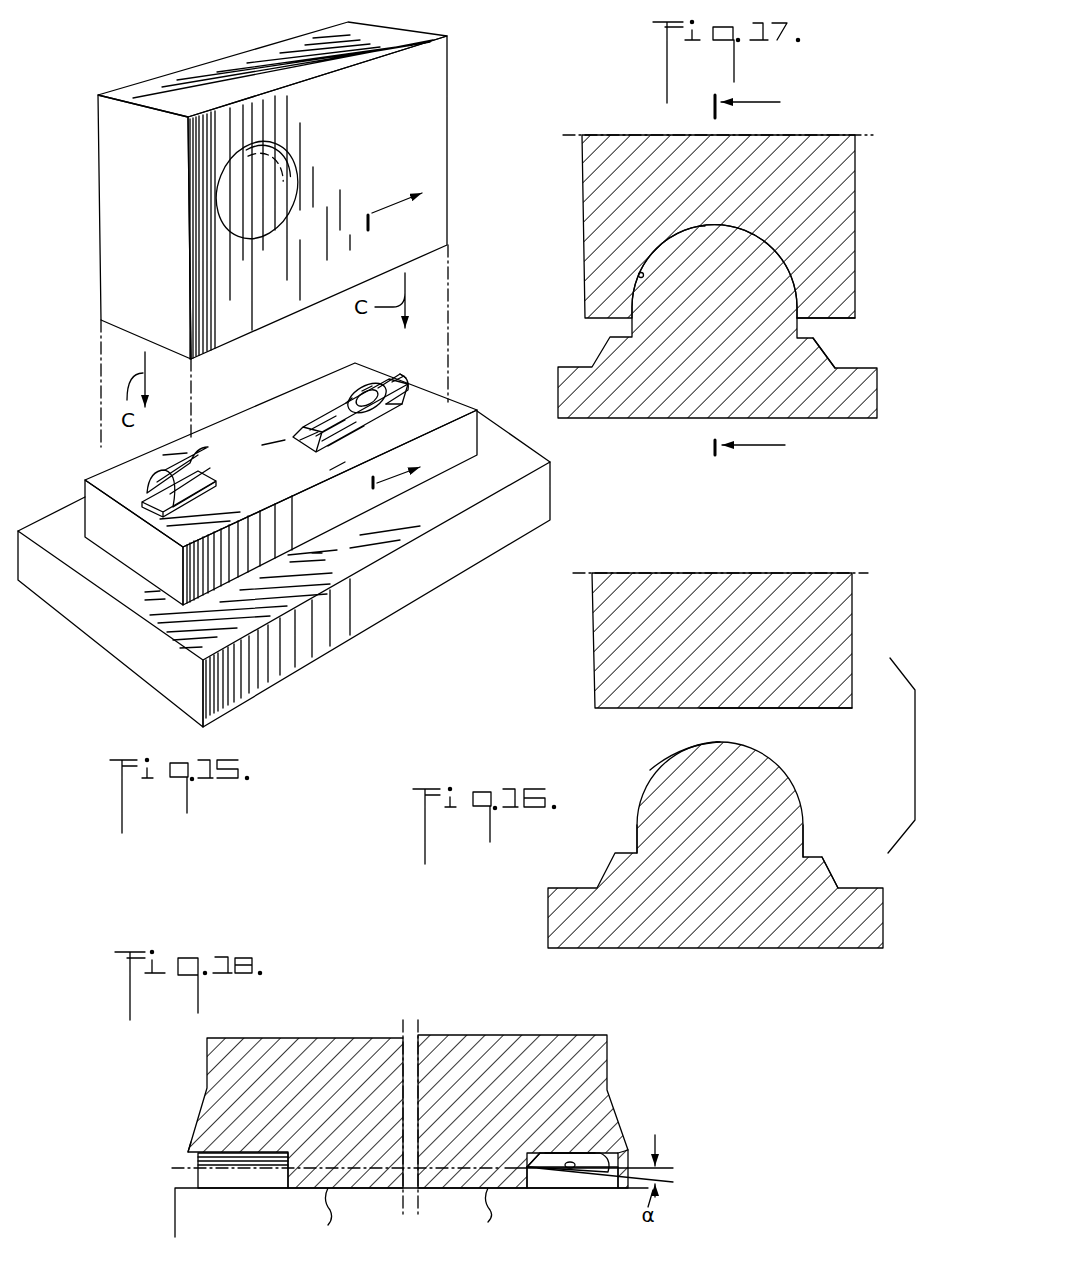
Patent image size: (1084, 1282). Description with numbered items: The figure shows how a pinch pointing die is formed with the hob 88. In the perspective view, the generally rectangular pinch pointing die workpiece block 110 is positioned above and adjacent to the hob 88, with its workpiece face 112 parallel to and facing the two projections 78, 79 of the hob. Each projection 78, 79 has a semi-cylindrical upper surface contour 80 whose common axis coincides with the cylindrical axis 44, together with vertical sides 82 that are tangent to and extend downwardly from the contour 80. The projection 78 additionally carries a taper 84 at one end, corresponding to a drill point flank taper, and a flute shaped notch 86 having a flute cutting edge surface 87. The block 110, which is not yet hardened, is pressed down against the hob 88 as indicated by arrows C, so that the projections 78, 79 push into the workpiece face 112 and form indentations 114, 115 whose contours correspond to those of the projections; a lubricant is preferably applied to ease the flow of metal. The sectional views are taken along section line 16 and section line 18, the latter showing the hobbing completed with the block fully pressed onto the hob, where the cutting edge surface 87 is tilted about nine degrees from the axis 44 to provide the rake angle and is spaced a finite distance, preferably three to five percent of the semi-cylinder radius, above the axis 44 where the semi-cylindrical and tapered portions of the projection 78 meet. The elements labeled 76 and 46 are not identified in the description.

In FIG. 15, the pinch pointing die workpiece block 110 is at (449, 84).
In FIG. 17, the pinch pointing die workpiece block 110 is at (848, 205).
In FIG. 16, the pinch pointing die workpiece block 110 is at (602, 673).
In FIG. 18, the pinch pointing die workpiece block 110 is at (598, 1061).
In FIG. 15, the hob 88 is at (295, 677).
In FIG. 17, the hob 88 is at (570, 350).
In FIG. 16, the hob 88 is at (612, 847).
In FIG. 15, the section line 16— 16 is at (381, 349).
In FIG. 17, the section line 18— 18 is at (732, 276).
In FIG. 15, the projection 79 is at (152, 481).
In FIG. 18, the projection 79 is at (198, 1177).
In FIG. 15, the semi-cylindrical upper surface contour 80 is at (197, 458).
In FIG. 16, the semi-cylindrical upper surface contour 80 is at (668, 758).
In FIG. 15, the taper 84 is at (350, 400).
In FIG. 18, the taper 84 is at (536, 1150).
In FIG. 15, the flute shaped notch 86 is at (367, 392).
In FIG. 18, the flute shaped notch 86 is at (565, 1153).
In FIG. 15, the projection 78 is at (392, 378).
In FIG. 18, the projection 78 is at (602, 1180).
In FIG. 15, the vertical sides 82 is at (404, 386).
In FIG. 16, the vertical sides 82 is at (635, 833).
In FIG. 15, the sloped step 76 is at (395, 410).
In FIG. 17, the sloped step 76 is at (826, 353).
In FIG. 16, the sloped step 76 is at (829, 868).
In FIG. 15, the flute cutting edge surface 87 is at (378, 410).
In FIG. 18, the flute cutting edge surface 87 is at (575, 1170).
In FIG. 17, the cylindrical axis 44 is at (713, 308).
In FIG. 18, the cylindrical axis 44 is at (183, 1165).
In FIG. 16, the dome 46 is at (715, 827).
In FIG. 17, the workpiece face 112 is at (832, 322).
In FIG. 16, the workpiece face 112 is at (818, 710).
In FIG. 17, the indentation 114 is at (639, 276).
In FIG. 18, the indentation 114 is at (627, 1152).
In FIG. 18, the indentation 115 is at (188, 1153).